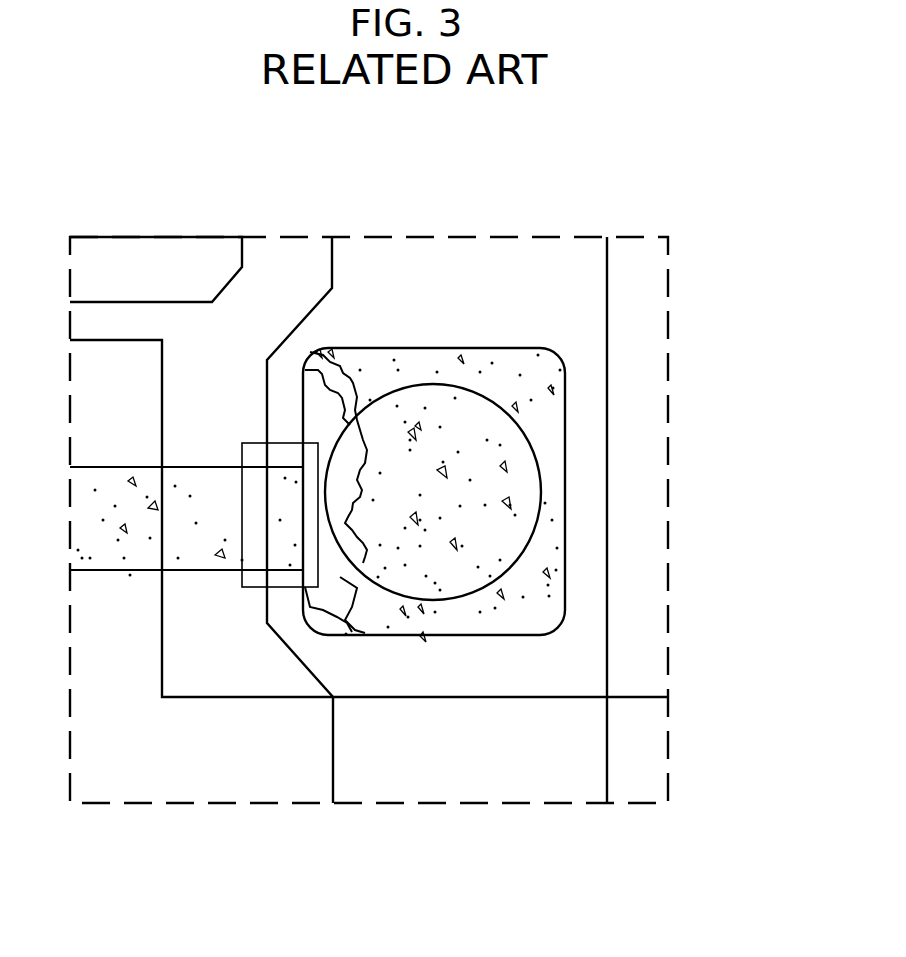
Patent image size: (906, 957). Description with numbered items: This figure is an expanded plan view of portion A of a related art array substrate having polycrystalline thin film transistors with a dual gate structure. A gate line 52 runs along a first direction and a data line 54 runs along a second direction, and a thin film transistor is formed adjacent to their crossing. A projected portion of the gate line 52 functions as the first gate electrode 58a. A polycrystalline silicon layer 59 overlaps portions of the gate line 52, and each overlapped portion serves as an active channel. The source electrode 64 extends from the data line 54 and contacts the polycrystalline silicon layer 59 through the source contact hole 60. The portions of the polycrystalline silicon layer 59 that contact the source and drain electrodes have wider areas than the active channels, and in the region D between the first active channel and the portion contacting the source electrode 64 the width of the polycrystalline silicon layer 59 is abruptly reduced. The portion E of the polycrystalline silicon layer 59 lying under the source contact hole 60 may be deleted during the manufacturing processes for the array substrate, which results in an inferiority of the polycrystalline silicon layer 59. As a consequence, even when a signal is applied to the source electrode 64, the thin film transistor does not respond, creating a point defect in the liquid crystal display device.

The first gate electrode 58a is at (113, 337).
The source electrode 64 is at (308, 320).
The portion of the polycrystalline silicon layer under the source contact hole E is at (343, 402).
The portion A is at (668, 300).
The source contact hole 60 is at (562, 460).
The polycrystalline silicon layer 59 is at (563, 522).
The region D is at (252, 590).
The data line 54 is at (608, 658).
The gate line 52 is at (645, 745).